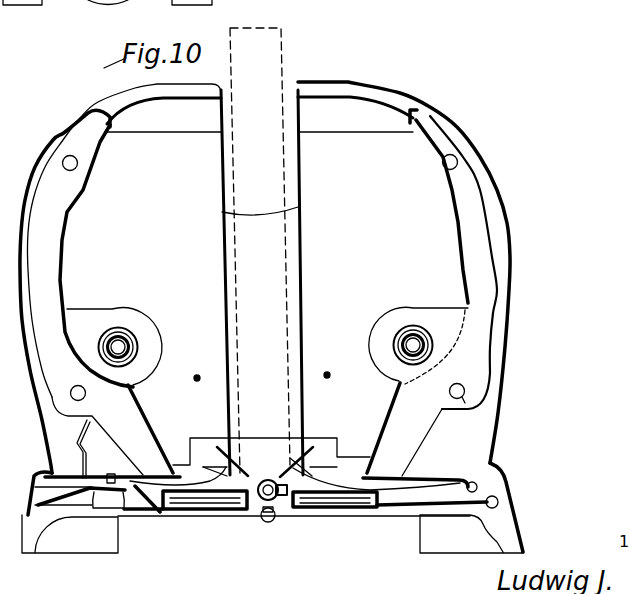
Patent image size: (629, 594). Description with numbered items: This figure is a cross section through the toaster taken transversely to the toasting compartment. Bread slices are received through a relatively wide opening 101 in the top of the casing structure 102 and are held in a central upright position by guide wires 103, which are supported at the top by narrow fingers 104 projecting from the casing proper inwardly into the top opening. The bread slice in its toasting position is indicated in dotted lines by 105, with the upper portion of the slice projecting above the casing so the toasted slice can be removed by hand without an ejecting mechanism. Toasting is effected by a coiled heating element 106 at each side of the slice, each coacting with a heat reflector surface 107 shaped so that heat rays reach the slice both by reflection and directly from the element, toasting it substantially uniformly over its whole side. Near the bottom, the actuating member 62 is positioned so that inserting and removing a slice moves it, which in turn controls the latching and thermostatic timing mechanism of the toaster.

The actuating member 62 is at (326, 375).
The opening 101 is at (265, 110).
The casing structure 102 is at (457, 128).
The guide wires 103 is at (298, 187).
The fingers 104 is at (157, 88).
The bread slice in toasting position 105 is at (282, 41).
The coiled heating element 106 is at (120, 340).
The heat reflector surface 107 is at (64, 241).